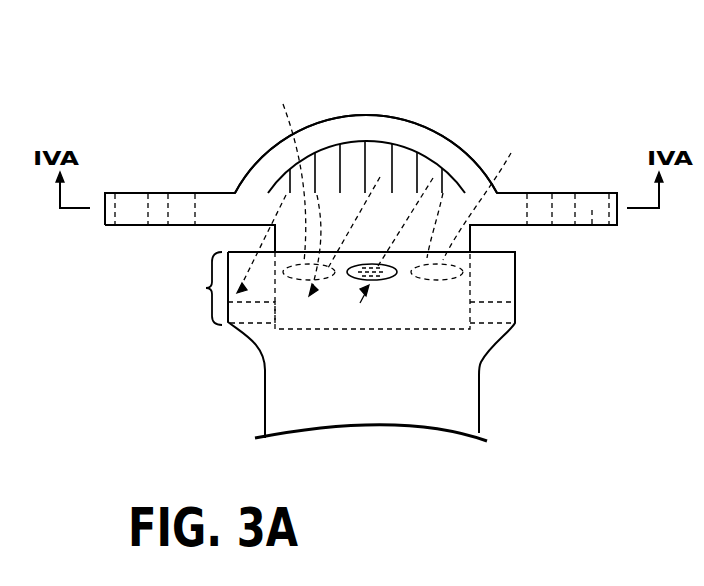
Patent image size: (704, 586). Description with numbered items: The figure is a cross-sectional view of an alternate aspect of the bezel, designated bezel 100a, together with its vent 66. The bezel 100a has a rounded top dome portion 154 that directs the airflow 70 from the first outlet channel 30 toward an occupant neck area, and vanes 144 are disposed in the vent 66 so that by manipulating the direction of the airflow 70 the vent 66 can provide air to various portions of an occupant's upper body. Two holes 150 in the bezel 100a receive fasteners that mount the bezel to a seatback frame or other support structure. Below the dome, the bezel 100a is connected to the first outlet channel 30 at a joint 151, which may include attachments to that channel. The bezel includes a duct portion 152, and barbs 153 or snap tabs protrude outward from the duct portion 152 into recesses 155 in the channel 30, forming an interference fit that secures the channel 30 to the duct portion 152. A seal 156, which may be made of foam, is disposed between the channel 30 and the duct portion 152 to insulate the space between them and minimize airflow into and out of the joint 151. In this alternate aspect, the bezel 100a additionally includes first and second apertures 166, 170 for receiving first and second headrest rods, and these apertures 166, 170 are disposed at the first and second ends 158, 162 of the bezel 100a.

The bezel 100a is at (208, 193).
The first outlet channel 30 is at (262, 412).
The vent 66 is at (409, 145).
The airflow 70 is at (247, 253).
The vanes 144 is at (345, 170).
The holes 150 is at (182, 198).
The joint 151 is at (192, 288).
The duct portion 152 is at (276, 234).
The barbs 153 is at (372, 453).
The top dome portion 154 is at (365, 116).
The recesses 155 is at (271, 184).
The seal 156 is at (243, 334).
The first end 158 is at (104, 203).
The second end 162 is at (619, 203).
The first aperture 166 is at (132, 220).
The second aperture 170 is at (592, 230).